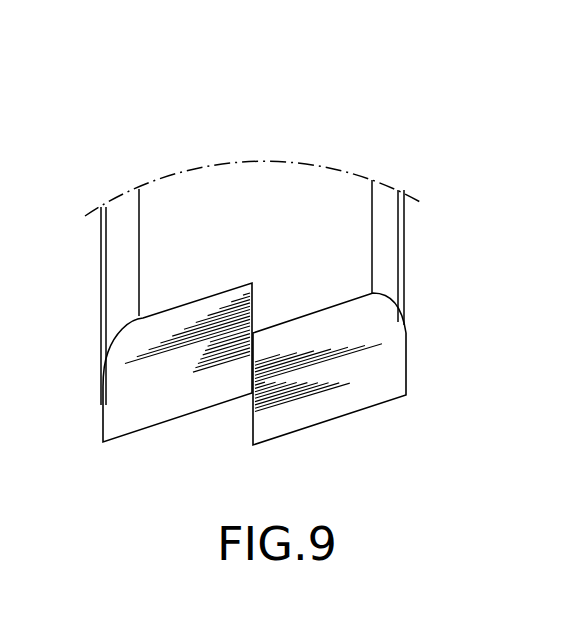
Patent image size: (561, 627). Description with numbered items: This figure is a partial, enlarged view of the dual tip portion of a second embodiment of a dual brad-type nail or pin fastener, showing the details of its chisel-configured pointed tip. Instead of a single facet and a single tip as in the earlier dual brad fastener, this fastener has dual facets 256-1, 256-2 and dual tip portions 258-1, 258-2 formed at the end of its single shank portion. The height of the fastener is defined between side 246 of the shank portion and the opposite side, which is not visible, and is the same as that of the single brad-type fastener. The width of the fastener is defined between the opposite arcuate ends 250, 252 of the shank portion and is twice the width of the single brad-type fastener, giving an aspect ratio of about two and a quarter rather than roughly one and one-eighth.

The side 246 is at (285, 223).
The arcuate end 250 is at (112, 295).
The arcuate end 252 is at (397, 263).
The facet 256-1 is at (150, 397).
The facet 256-2 is at (373, 383).
The tip portion 258-1 is at (180, 420).
The tip portion 258-2 is at (318, 425).